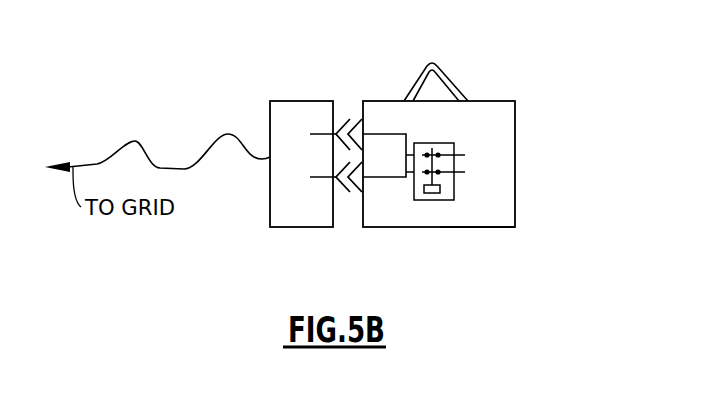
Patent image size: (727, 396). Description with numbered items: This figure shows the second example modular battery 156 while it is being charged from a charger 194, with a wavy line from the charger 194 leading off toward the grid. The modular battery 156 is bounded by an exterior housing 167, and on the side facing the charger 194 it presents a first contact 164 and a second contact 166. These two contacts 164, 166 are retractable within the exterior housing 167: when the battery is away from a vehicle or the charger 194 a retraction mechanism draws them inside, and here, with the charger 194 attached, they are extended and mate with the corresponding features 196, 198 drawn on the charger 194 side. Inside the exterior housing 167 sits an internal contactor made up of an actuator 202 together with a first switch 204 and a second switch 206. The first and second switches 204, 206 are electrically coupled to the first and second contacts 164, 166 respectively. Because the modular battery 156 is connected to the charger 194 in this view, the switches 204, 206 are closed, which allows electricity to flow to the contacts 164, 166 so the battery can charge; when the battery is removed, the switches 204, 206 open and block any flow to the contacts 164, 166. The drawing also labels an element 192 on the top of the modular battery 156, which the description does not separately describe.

The modular battery 156 is at (524, 190).
The first contact 164 is at (358, 118).
The second contact 166 is at (355, 192).
The exterior housing 167 is at (508, 228).
The handle 192 is at (452, 72).
The charger 194 is at (311, 108).
The upper connector (box side) 196 is at (341, 118).
The lower connector (box side) 198 is at (341, 192).
The actuator 202 is at (435, 195).
The first switch 204 is at (437, 150).
The second switch 206 is at (440, 173).